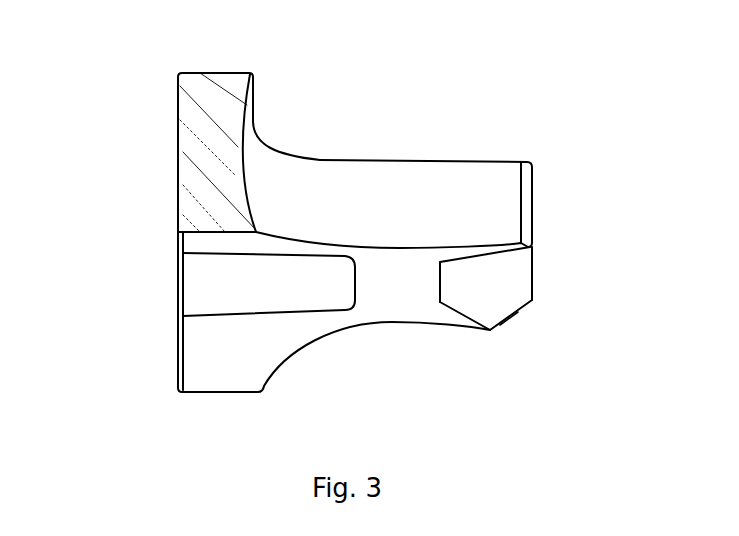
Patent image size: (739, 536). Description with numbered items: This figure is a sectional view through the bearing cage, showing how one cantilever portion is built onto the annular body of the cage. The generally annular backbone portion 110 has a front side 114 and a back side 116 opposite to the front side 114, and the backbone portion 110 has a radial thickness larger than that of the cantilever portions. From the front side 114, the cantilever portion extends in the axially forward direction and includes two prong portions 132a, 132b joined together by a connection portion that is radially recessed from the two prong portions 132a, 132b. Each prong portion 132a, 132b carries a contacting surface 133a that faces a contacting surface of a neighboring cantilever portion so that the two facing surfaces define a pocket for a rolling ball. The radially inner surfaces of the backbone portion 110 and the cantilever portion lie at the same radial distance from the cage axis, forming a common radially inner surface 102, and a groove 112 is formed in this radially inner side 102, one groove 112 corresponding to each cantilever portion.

The common radially inner surface 102 is at (218, 360).
The backbone portion 110 is at (219, 127).
The groove 112 is at (203, 278).
The front side 114 is at (253, 117).
The back side 116 is at (178, 180).
The prong portion 132a is at (486, 250).
The prong portion 132b is at (453, 312).
The contacting surface 133a is at (485, 178).